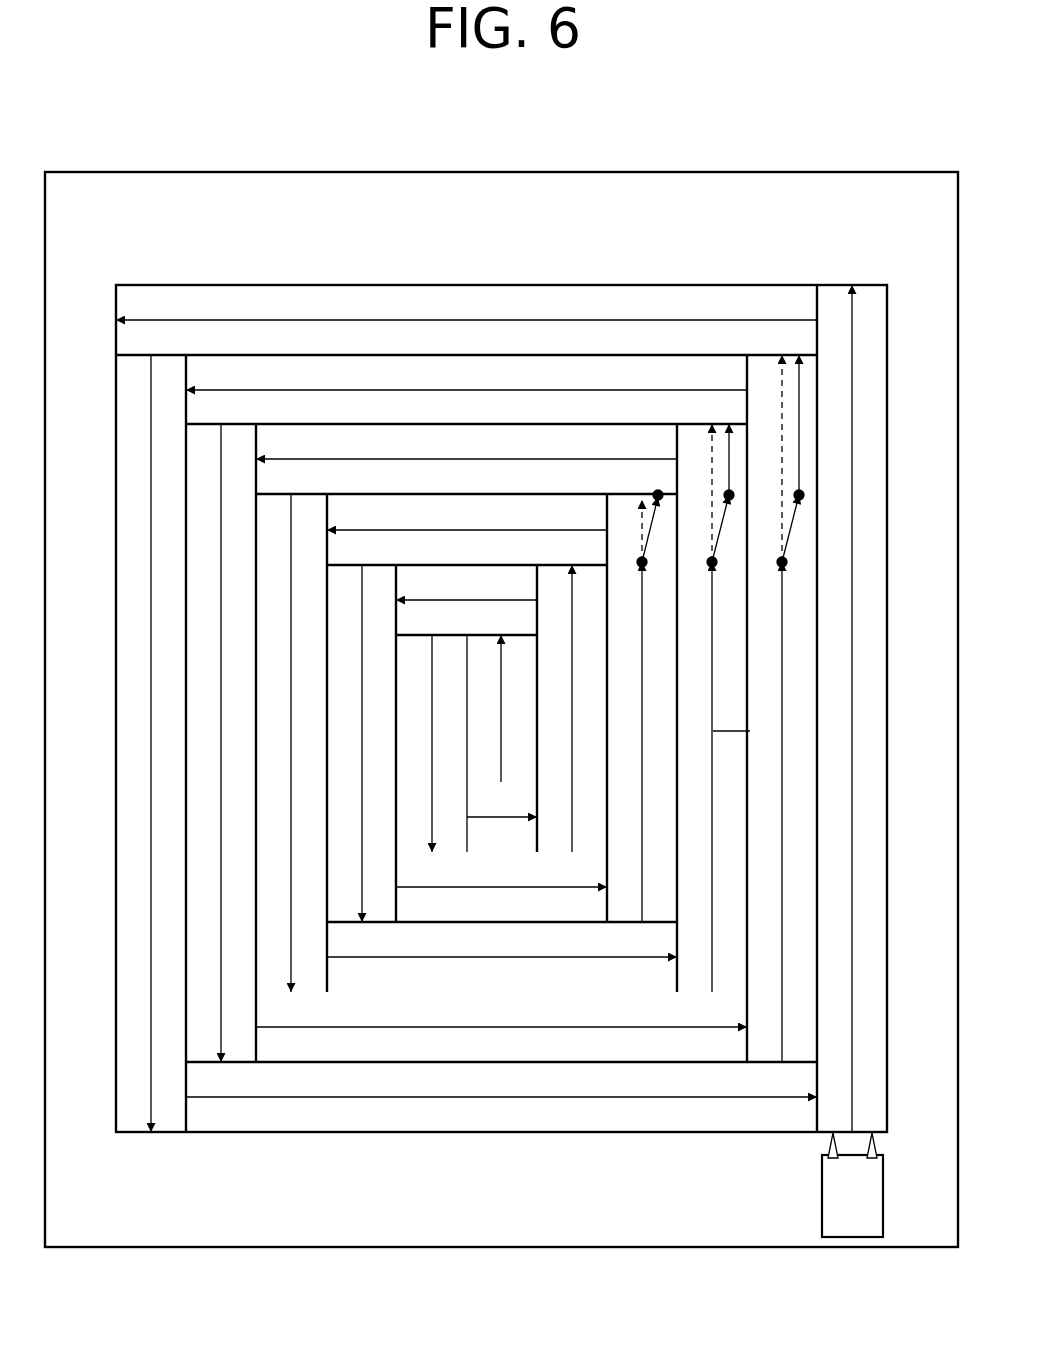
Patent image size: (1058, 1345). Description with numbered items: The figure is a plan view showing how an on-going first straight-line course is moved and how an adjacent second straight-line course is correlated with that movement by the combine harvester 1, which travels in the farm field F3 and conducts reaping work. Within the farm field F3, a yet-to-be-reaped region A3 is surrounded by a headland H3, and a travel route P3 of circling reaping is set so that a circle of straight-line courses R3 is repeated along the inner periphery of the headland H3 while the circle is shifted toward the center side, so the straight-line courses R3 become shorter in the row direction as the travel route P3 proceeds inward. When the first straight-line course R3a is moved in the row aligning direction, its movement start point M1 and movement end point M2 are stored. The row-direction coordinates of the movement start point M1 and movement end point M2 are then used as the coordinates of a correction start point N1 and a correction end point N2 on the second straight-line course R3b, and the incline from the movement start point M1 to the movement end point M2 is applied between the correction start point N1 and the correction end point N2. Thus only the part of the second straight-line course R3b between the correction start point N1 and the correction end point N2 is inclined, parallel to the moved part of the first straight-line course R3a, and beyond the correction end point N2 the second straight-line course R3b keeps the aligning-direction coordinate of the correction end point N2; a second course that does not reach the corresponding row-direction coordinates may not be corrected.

The farm field F3 is at (168, 172).
The yet-to-be-reaped region A3 is at (250, 283).
The headland H3 is at (338, 210).
The travel route P3 is at (922, 272).
The straight-line course R3 is at (855, 355).
The first straight-line course R3a is at (785, 704).
The second straight-line course R3b is at (762, 729).
The correction start point N1 is at (712, 562).
The movement start point M1 is at (782, 562).
The movement end point M2 is at (799, 495).
The correction end point N2 is at (735, 490).
The combine harvester 1 is at (820, 1195).